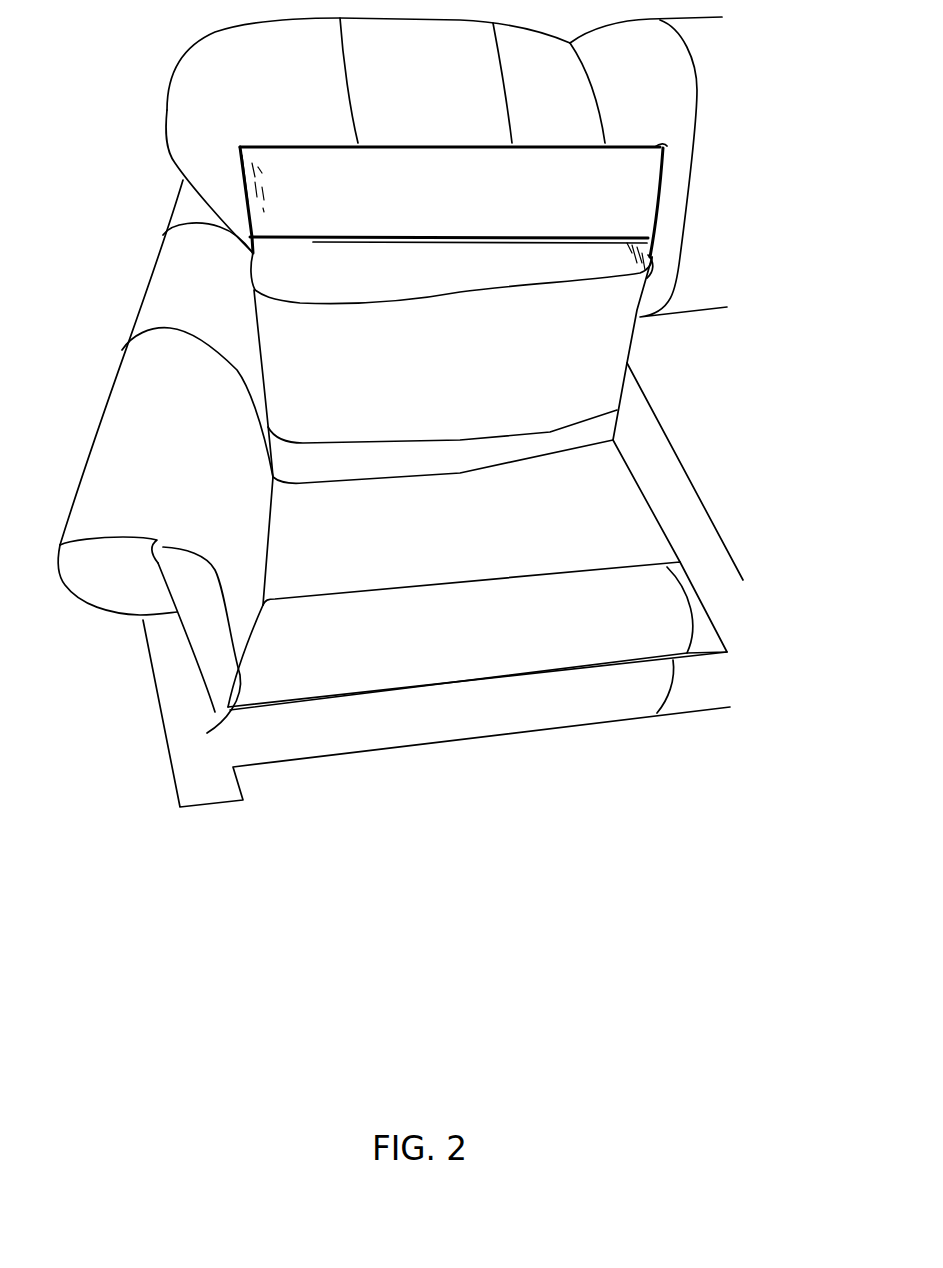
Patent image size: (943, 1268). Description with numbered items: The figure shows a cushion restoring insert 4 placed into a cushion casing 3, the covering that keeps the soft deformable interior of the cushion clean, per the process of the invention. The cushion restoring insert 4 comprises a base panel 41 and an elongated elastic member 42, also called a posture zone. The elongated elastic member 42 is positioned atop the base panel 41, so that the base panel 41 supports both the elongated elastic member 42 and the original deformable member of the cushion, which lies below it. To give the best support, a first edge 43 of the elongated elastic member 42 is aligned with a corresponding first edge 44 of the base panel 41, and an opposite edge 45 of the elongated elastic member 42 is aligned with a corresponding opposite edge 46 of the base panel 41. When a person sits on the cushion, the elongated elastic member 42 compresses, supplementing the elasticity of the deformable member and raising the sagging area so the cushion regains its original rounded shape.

The cushion casing 3 is at (277, 338).
The cushion restoring insert 4 is at (482, 185).
The base panel 41 is at (655, 173).
The elongated elastic member 42 is at (613, 267).
The first edge of the elongated elastic member 43 is at (253, 263).
The first edge of the base panel 44 is at (240, 155).
The opposite edge of the elongated elastic member 45 is at (650, 252).
The opposite edge of the base panel 46 is at (663, 148).